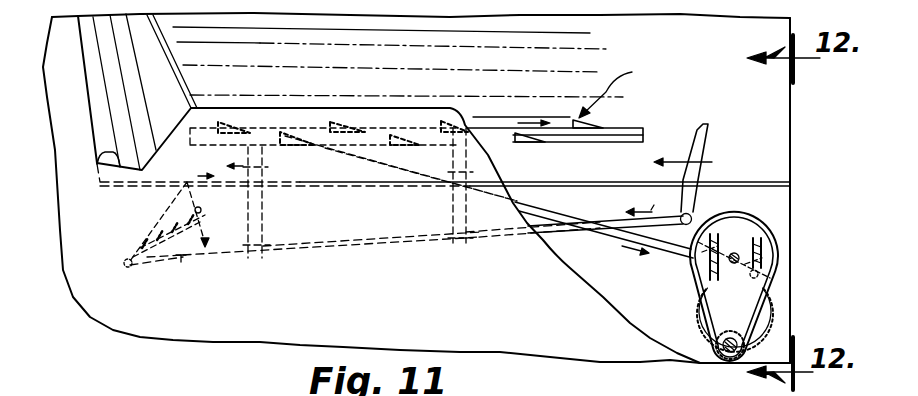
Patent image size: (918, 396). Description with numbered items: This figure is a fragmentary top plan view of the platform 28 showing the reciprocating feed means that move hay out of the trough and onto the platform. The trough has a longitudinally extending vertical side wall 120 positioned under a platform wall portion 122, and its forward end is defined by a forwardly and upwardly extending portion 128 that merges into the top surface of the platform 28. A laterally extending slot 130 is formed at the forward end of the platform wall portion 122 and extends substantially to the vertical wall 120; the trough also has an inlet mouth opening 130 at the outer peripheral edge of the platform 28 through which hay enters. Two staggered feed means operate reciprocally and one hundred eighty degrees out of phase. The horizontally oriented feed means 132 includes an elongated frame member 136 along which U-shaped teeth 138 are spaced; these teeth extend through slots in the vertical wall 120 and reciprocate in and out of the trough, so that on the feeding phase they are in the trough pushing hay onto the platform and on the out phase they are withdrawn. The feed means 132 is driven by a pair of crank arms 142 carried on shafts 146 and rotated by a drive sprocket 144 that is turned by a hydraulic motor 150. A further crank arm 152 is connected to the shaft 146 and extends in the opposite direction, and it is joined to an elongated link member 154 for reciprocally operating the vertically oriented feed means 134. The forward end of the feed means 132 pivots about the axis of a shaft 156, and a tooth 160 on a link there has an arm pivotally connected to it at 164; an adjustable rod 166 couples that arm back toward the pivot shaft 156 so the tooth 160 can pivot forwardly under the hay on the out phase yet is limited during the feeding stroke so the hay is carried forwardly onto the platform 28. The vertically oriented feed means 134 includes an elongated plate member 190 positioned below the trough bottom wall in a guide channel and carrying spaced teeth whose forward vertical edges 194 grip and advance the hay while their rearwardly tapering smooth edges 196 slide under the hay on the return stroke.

The platform 28 is at (72, 81).
The forwardly and upwardly extending portion 128 is at (146, 89).
The inlet mouth opening 130 is at (97, 157).
The platform wall portion 122 is at (280, 112).
The vertically oriented feed means 134 is at (622, 90).
The forward vertical edges 194 is at (570, 125).
The rearwardly tapering smooth edges 196 is at (592, 116).
The elongated plate member 190 is at (632, 127).
The U-shaped teeth 138 is at (708, 137).
The vertical side wall 120 is at (738, 181).
The elongated link member 154 is at (556, 211).
The crank arms 142 is at (688, 243).
The drive sprocket 144 is at (719, 290).
The shafts 146 is at (735, 254).
The further crank arm 152 is at (776, 280).
The hydraulic motor 150 is at (722, 351).
The tooth 160 is at (183, 193).
The adjustable rod 166 is at (170, 218).
The pivot connection 164 is at (203, 212).
The shaft 156 is at (183, 262).
The horizontally oriented feed means 132 is at (303, 256).
The elongated frame member 136 is at (384, 245).